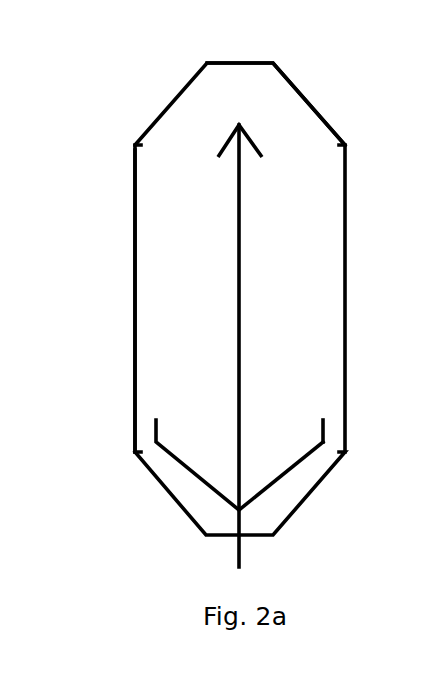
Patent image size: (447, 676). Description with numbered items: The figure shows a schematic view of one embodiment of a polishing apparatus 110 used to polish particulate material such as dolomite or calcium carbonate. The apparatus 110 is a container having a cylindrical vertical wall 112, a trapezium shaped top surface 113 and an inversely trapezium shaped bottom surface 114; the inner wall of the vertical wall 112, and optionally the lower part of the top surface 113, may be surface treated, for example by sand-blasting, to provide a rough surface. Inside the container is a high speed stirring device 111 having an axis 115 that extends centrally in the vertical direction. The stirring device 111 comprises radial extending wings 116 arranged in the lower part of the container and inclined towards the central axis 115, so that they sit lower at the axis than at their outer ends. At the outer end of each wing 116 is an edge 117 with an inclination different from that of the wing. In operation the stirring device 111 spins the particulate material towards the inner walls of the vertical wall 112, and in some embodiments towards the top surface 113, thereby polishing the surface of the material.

The polishing apparatus 110 is at (272, 220).
The stirring device 111 is at (188, 457).
The cylindrical vertical wall 112 is at (135, 230).
The top surface 113 is at (312, 105).
The bottom surface 114 is at (168, 493).
The axis 115 is at (240, 315).
The radial extending wings 116 is at (292, 472).
The edge 117 is at (325, 430).